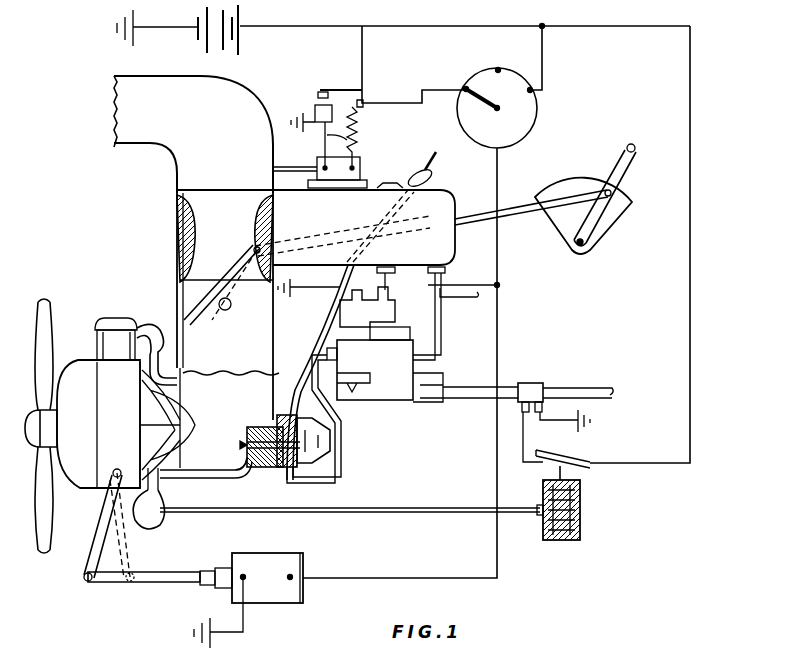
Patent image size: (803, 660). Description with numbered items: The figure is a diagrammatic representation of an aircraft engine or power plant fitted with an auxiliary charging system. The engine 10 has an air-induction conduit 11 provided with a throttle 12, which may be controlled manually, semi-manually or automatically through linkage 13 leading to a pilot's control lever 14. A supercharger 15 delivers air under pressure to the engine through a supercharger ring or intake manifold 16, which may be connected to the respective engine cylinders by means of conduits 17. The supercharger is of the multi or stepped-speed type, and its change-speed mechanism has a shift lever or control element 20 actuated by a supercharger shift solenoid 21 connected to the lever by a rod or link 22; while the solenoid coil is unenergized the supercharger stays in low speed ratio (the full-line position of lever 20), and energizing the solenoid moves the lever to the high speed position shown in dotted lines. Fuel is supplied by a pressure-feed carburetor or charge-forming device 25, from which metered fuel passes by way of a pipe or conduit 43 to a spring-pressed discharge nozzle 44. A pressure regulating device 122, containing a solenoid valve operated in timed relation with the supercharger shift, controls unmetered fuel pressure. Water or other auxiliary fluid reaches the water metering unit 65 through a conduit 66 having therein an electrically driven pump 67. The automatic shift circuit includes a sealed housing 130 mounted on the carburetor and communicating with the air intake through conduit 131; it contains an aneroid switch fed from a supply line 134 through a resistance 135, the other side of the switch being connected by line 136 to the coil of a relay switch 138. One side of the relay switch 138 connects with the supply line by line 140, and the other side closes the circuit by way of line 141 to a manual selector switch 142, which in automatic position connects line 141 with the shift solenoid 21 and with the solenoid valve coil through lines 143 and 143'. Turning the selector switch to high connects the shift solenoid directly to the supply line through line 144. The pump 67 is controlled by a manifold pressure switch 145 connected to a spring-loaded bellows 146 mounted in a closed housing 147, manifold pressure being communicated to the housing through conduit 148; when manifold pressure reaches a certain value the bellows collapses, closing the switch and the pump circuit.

The engine 10 is at (75, 388).
The air-induction conduit 11 is at (150, 133).
The throttle 12 is at (202, 325).
The linkage 13 is at (468, 222).
The pilot's control lever 14 is at (622, 173).
The supercharger 15 is at (170, 447).
The supercharger ring or intake manifold 16 is at (162, 527).
The conduits 17 is at (150, 325).
The shift lever or control element 20 is at (100, 540).
The supercharger shift solenoid 21 is at (280, 558).
The rod or link 22 is at (165, 582).
The carburetor or charge-forming device 25 is at (440, 208).
The pipe or conduit 43 is at (436, 152).
The discharge nozzle 44 is at (262, 462).
The water metering unit 65 is at (388, 398).
The conduit 66 is at (466, 387).
The pump 67 is at (532, 385).
The pressure regulating device 122 is at (398, 312).
The sealed housing 130 is at (368, 166).
The conduit 131 is at (289, 166).
The supply line 134 is at (305, 27).
The resistance 135 is at (364, 126).
The line 136 is at (358, 143).
The relay switch 138 is at (316, 110).
The line 140 is at (363, 49).
The line 141 is at (437, 98).
The manual selector switch 142 is at (492, 84).
The line 143 is at (496, 302).
The line 143' is at (465, 270).
The line 144 is at (548, 52).
The manifold pressure switch 145 is at (574, 458).
The spring-loaded bellows 146 is at (583, 505).
The closed housing 147 is at (583, 532).
The conduit 148 is at (410, 512).